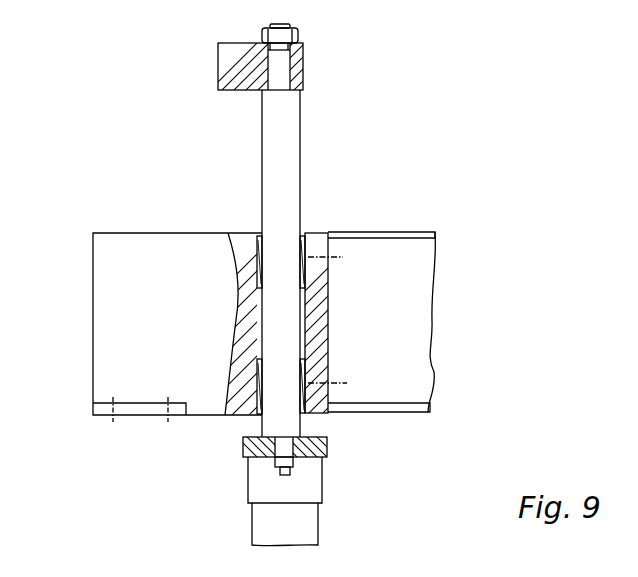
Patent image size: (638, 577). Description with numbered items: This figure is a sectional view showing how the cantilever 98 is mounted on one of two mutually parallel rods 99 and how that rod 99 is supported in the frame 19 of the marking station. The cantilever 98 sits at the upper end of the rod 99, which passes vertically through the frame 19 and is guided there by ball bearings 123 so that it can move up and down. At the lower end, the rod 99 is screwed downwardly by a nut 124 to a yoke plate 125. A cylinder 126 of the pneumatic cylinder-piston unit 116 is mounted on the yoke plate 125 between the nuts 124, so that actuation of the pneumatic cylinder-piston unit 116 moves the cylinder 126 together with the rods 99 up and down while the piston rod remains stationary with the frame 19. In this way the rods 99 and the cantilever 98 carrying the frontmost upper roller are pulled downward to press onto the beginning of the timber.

The frame 19 is at (93, 343).
The cantilever 98 is at (218, 83).
The rod 99 is at (300, 147).
The ball bearings 123 is at (302, 231).
The nut 124 is at (293, 468).
The yoke plate 125 is at (327, 443).
The cylinder 126 is at (248, 481).
The pneumatic cylinder-piston unit 116 is at (252, 529).